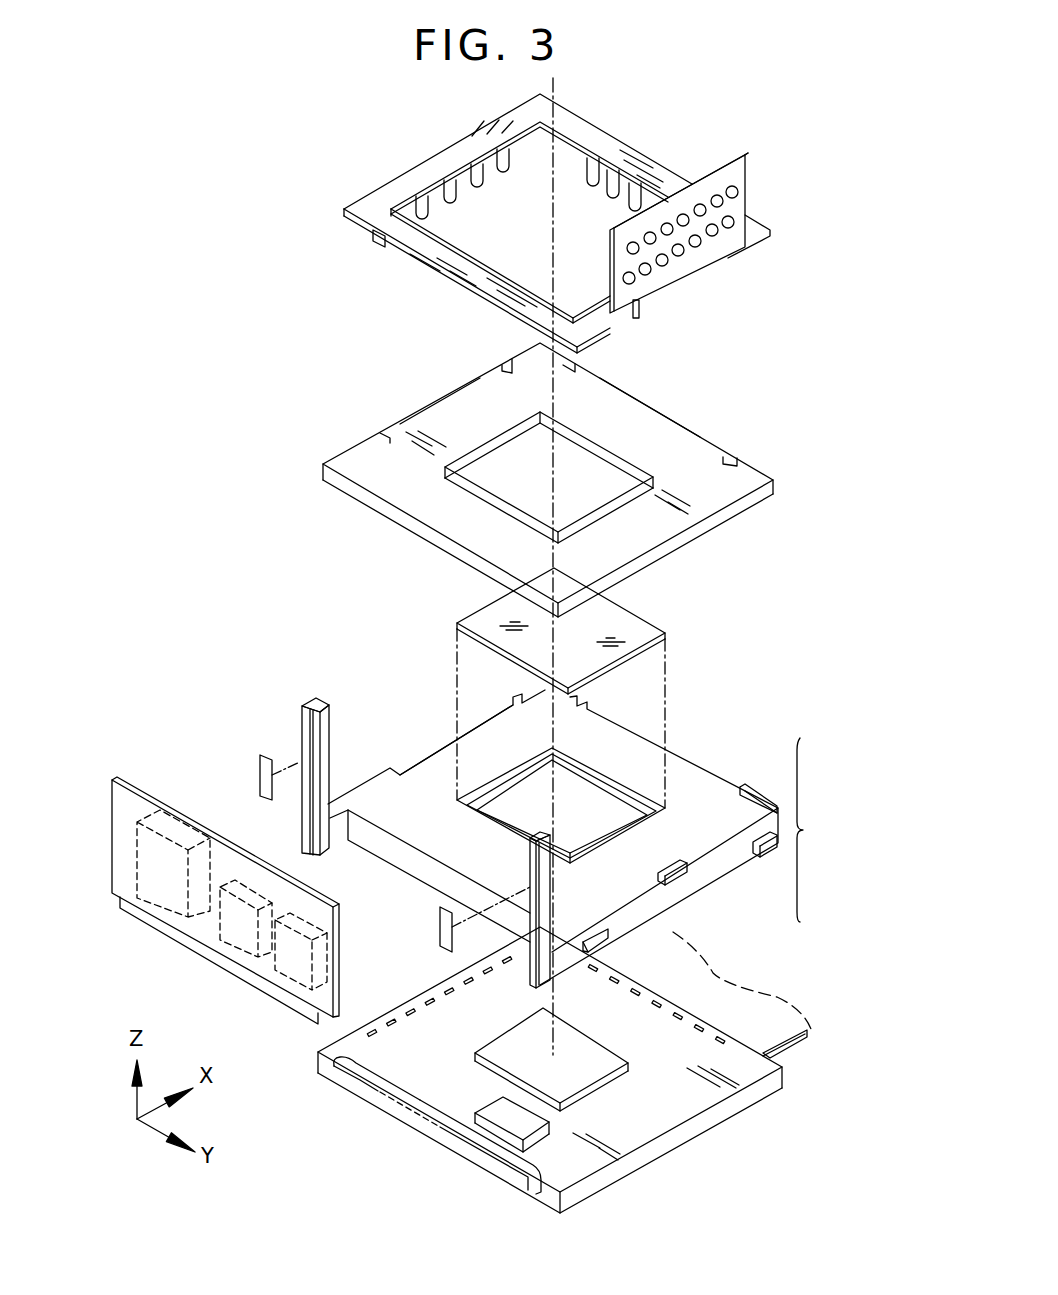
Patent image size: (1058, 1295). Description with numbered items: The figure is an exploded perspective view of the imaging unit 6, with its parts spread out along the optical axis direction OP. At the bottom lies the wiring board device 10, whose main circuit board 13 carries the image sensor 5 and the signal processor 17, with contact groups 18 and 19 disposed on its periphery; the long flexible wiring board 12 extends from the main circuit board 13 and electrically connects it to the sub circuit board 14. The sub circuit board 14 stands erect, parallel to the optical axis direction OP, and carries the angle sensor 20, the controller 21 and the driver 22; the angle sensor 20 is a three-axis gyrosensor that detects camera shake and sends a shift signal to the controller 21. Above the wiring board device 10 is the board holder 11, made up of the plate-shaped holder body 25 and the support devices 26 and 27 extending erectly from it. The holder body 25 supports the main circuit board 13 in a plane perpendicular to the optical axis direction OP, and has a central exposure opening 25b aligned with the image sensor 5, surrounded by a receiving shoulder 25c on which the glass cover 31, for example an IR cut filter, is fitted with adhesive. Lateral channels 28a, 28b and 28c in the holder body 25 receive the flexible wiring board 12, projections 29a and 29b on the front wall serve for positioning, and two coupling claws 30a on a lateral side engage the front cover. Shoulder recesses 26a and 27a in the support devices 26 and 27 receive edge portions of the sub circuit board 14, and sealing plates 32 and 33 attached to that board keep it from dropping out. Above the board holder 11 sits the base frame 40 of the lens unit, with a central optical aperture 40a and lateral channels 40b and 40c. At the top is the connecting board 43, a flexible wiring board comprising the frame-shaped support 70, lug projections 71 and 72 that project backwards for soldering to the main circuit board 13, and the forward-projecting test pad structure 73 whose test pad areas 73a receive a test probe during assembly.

The optical axis direction OP is at (558, 88).
The frame-shaped support 70 is at (622, 150).
The lug projection 71 is at (593, 170).
The lug projection 72 is at (458, 192).
The connecting board 43 is at (403, 255).
The test pad structure 73 is at (747, 172).
The test pad areas 73a is at (698, 243).
The base frame 40 is at (433, 507).
The optical aperture 40a is at (603, 453).
The lateral channel 40b is at (607, 390).
The lateral channel 40c is at (428, 412).
The glass cover 31 is at (620, 617).
The imaging unit 6 is at (537, 823).
The holder body 25 is at (566, 829).
The board holder 11 is at (707, 777).
The lateral channel 28a is at (393, 850).
The lateral channel 28b is at (432, 753).
The lateral channel 28c is at (683, 767).
The receiving shoulder 25c is at (590, 783).
The exposure opening 25b is at (597, 830).
The projection 29a is at (677, 870).
The projection 29b is at (745, 801).
The coupling claws 30a is at (753, 833).
The support device 26 is at (298, 757).
The shoulder recess 26a is at (317, 827).
The support device 27 is at (536, 910).
The shoulder recess 27a is at (530, 851).
The sealing plate 32 is at (258, 778).
The sealing plate 33 is at (440, 936).
The sub circuit board 14 is at (125, 775).
The angle sensor 20 is at (155, 890).
The controller 21 is at (233, 933).
The driver 22 is at (288, 973).
The wiring board device 10 is at (715, 967).
The main circuit board 13 is at (653, 1127).
The flexible wiring board 12 is at (777, 1033).
The contact group 19 is at (382, 1037).
The contact group 18 is at (668, 1013).
The image sensor 5 is at (573, 1075).
The signal processor 17 is at (507, 1122).